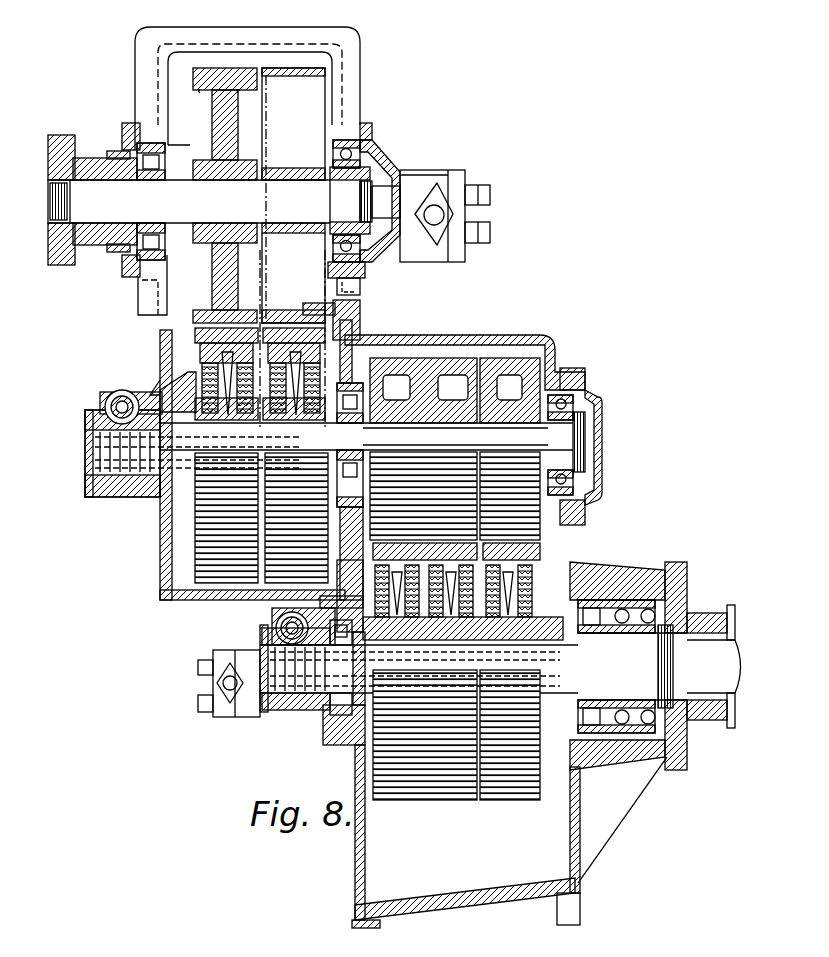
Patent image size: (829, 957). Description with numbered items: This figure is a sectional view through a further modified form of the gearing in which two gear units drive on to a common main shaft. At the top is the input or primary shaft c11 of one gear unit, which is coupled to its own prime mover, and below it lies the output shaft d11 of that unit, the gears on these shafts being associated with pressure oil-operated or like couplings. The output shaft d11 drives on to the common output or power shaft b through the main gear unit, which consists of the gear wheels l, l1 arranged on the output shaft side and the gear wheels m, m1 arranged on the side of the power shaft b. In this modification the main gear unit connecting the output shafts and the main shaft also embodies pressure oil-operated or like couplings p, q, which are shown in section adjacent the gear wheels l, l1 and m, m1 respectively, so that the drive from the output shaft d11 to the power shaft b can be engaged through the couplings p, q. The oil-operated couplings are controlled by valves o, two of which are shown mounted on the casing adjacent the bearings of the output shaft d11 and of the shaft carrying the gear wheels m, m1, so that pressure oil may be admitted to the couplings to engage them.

The input shaft c11 is at (110, 214).
The gear wheel of main gear unit l is at (434, 361).
The gear wheel of main gear unit l1 is at (512, 361).
The valve o is at (108, 396).
The output shaft d11 is at (152, 492).
The pressure oil-operated coupling q is at (570, 565).
The pressure oil-operated coupling p is at (330, 599).
The output or power shaft b is at (716, 677).
The gear wheel of main gear unit m is at (408, 783).
The gear wheel of main gear unit m1 is at (521, 789).